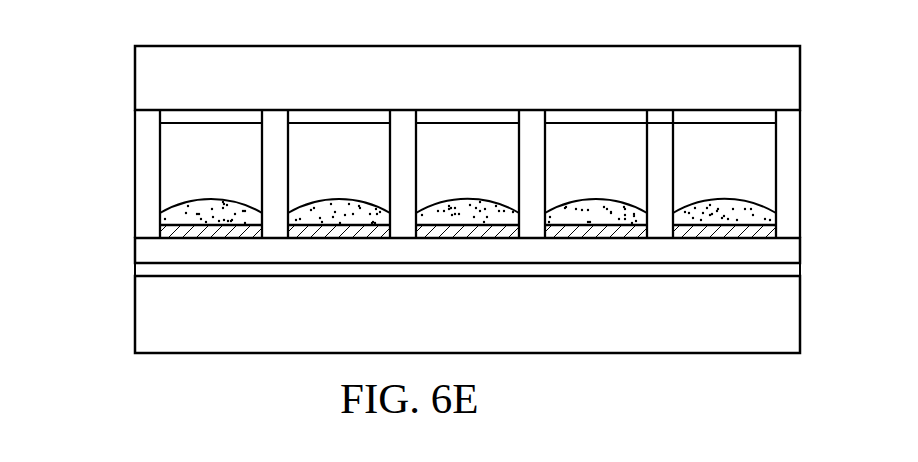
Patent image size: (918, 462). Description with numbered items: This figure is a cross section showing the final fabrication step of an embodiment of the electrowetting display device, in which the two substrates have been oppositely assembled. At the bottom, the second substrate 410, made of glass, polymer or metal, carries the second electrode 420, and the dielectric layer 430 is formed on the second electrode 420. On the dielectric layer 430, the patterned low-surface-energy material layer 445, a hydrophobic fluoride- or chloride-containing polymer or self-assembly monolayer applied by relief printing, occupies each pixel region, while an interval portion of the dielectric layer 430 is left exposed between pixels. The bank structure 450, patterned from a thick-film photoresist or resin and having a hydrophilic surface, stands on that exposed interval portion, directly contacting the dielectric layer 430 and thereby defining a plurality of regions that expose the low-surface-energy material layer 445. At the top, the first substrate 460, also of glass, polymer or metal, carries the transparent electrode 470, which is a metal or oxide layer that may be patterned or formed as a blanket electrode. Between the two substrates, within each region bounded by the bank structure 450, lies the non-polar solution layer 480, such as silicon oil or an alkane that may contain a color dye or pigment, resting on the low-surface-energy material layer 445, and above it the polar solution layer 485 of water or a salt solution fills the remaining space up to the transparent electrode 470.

The second substrate 410 is at (147, 314).
The second electrode 420 is at (147, 270).
The dielectric layer 430 is at (147, 250).
The low-surface-energy material layer 445 is at (163, 227).
The bank structure 450 is at (148, 173).
The first substrate 460 is at (148, 77).
The transparent electrode 470 is at (172, 118).
The non-polar solution layer 480 is at (163, 207).
The polar solution layer 485 is at (172, 147).